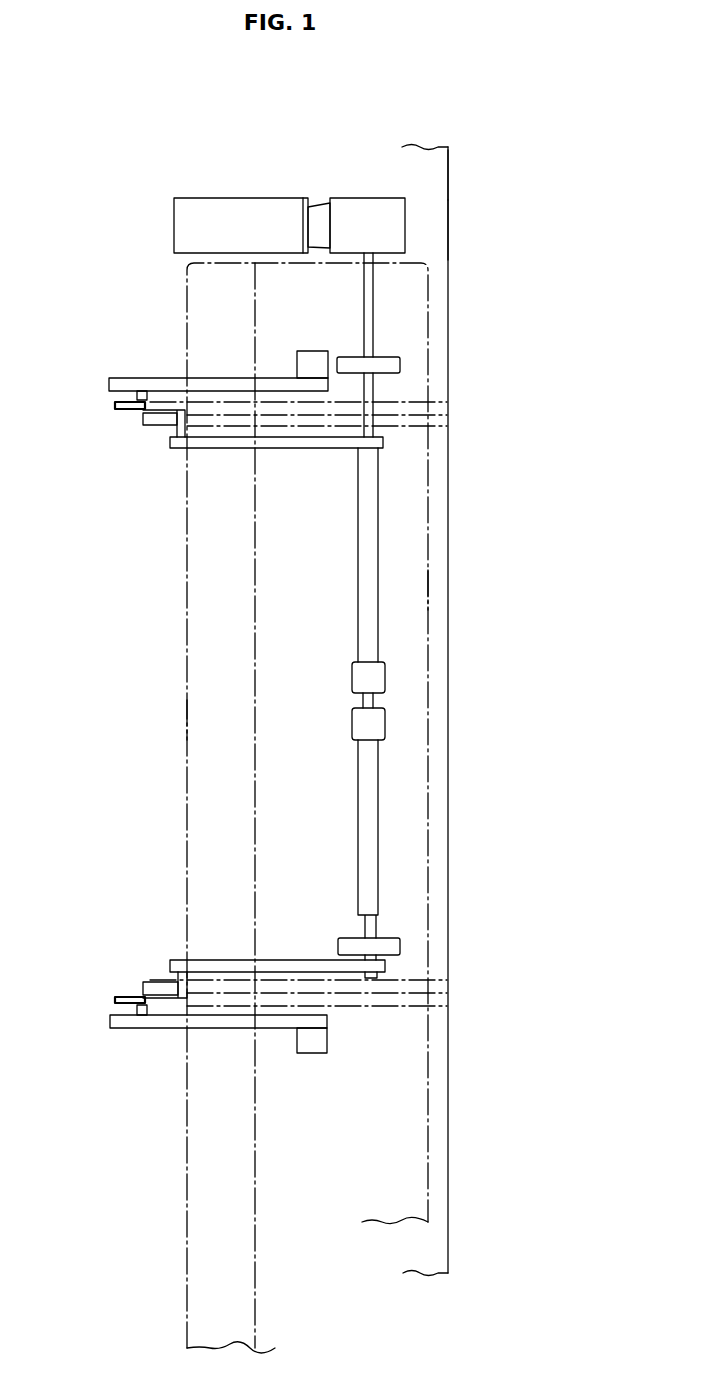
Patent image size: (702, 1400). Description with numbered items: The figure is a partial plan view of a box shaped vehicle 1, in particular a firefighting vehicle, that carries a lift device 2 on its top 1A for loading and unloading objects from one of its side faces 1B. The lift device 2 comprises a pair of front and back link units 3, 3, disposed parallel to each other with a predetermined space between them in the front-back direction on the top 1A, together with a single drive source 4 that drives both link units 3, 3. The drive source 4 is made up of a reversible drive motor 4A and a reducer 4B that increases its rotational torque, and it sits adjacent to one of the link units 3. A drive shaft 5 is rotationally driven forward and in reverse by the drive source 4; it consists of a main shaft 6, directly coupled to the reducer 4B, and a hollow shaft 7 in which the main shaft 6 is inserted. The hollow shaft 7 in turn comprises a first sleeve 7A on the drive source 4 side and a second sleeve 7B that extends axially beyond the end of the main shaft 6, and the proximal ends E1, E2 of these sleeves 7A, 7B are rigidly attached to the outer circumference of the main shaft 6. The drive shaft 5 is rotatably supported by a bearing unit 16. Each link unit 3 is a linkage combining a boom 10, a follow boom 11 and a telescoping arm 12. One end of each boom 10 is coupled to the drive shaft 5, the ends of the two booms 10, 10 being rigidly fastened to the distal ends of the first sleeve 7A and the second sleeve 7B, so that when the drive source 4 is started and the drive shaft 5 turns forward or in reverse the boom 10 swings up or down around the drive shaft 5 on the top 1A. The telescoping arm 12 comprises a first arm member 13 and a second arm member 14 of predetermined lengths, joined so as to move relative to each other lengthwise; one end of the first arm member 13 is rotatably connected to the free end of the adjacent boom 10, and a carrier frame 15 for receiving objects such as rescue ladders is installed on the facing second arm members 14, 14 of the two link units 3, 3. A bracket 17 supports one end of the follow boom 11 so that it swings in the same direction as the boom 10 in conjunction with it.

The vehicle 1 is at (446, 148).
The top of the vehicle 1A is at (436, 175).
The side face of the vehicle 1B is at (449, 228).
The lift device 2 is at (133, 720).
The link unit 3 is at (96, 404).
The drive source 4 is at (289, 177).
The drive motor 4A is at (238, 208).
The reducer 4B is at (370, 208).
The drive shaft 5 is at (410, 589).
The main shaft 6 is at (375, 298).
The hollow shaft 7 is at (419, 693).
The first sleeve 7A is at (378, 634).
The second sleeve 7B is at (378, 752).
The proximal end of the first sleeve E1 is at (352, 677).
The proximal end of the second sleeve E2 is at (352, 727).
The boom 10 is at (170, 440).
The follow boom 11 is at (118, 378).
The telescoping arm 12 is at (358, 709).
The first arm member 13 is at (425, 420).
The second arm member 14 is at (425, 413).
The carrier frame 15 is at (187, 845).
The bearing unit 16 is at (400, 365).
The bracket 17 is at (305, 351).